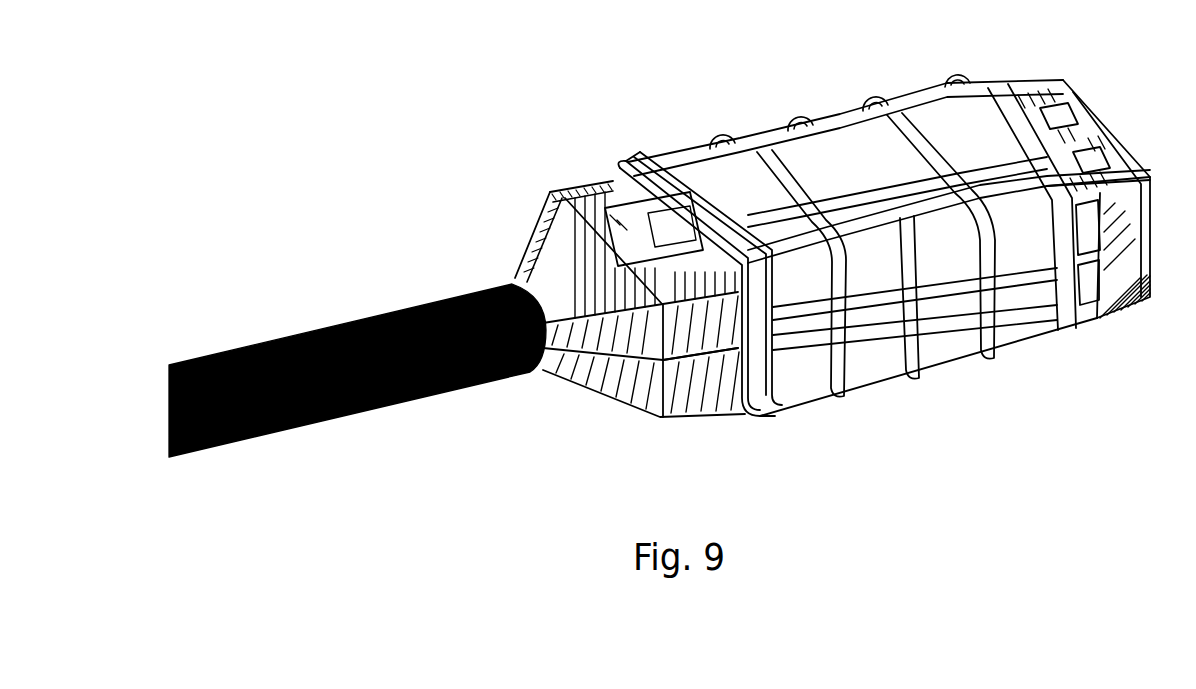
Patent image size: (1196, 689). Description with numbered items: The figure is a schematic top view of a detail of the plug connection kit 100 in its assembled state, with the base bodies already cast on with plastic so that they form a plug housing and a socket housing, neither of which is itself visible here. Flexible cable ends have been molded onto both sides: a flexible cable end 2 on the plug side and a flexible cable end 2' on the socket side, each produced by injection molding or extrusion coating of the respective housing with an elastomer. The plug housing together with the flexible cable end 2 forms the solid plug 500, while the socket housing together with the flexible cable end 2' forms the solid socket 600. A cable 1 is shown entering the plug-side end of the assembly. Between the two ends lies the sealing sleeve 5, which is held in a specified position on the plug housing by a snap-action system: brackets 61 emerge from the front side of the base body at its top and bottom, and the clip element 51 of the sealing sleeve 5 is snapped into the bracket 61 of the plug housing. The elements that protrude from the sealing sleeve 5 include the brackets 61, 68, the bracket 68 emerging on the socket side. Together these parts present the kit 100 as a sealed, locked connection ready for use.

The plug connection kit 100 is at (438, 101).
The cable 1 is at (420, 306).
The flexible cable end 2 is at (565, 197).
The flexible cable end 2' is at (1127, 287).
The sealing sleeve 5 is at (938, 392).
The clip element 51 is at (622, 216).
The bracket 61 is at (682, 350).
The bracket 68 is at (1035, 118).
The solid plug 500 is at (598, 430).
The solid socket 600 is at (1127, 116).